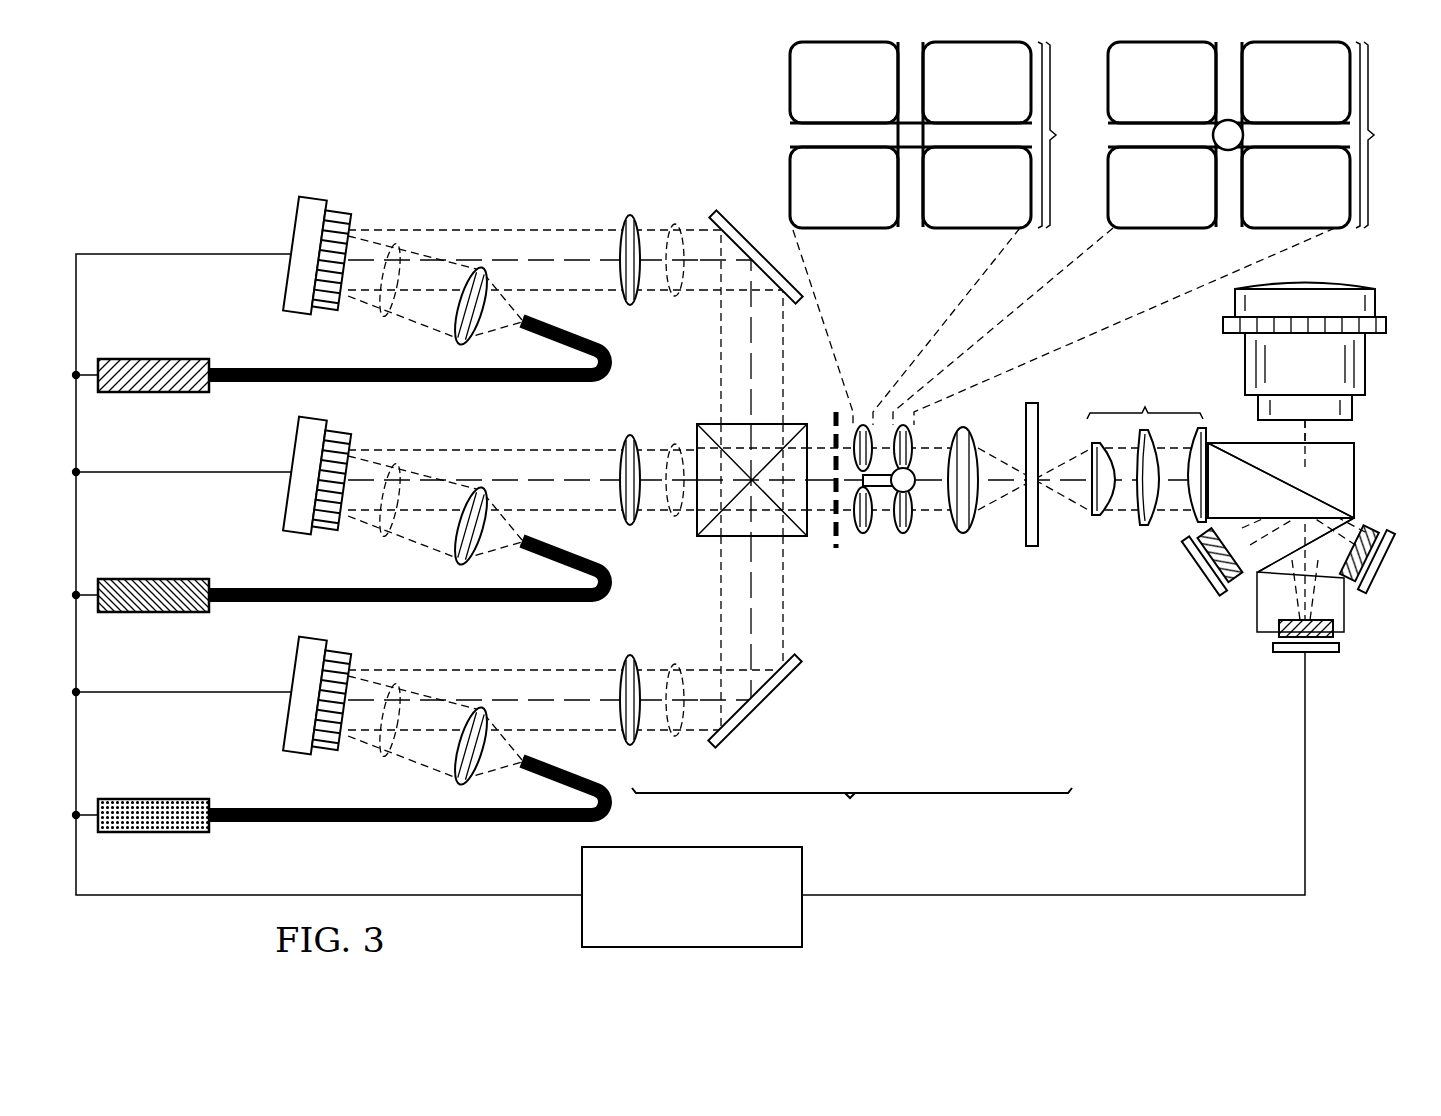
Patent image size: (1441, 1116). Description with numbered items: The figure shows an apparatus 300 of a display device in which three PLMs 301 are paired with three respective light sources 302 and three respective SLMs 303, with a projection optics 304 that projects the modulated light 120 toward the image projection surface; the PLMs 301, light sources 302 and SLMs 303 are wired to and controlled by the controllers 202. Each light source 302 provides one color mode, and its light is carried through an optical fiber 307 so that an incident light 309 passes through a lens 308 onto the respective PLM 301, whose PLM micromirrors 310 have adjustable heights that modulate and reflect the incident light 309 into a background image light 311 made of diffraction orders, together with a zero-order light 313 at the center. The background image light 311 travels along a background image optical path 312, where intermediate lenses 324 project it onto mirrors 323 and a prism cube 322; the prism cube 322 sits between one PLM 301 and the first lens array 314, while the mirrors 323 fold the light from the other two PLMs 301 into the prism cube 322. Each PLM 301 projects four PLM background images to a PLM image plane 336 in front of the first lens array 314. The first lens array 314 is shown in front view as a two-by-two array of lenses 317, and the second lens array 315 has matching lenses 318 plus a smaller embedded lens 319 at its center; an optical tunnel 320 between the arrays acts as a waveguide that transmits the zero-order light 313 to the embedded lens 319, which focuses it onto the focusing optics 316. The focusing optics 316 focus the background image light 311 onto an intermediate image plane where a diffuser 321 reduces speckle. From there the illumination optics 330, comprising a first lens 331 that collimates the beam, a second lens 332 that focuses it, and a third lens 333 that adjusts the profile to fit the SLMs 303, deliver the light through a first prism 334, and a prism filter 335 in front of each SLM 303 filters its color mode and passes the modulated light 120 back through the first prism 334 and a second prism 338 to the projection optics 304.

The modulated light 120 is at (1312, 452).
The controllers 202 is at (712, 927).
The apparatus 300 is at (440, 140).
The PLM 301 is at (293, 222).
The light source 302 is at (148, 359).
The SLM 303 is at (1203, 582).
The projection optics 304 is at (1348, 284).
The optical fiber 307 is at (272, 367).
The lens 308 is at (460, 330).
The incident light 309 is at (383, 317).
The PLM micromirrors 310 is at (352, 222).
The background image light 311 is at (675, 223).
The background image optical path 312 is at (852, 812).
The zero-order light 313 is at (672, 294).
The first lens array 314 is at (866, 410).
The second lens array 315 is at (897, 548).
The focusing optics 316 is at (966, 534).
The lenses 317 is at (864, 95).
The lenses 318 is at (1182, 95).
The embedded lens 319 is at (912, 492).
The optical tunnel 320 is at (880, 505).
The diffuser 321 is at (1032, 548).
The prism cube 322 is at (712, 540).
The mirror 323 is at (743, 232).
The intermediate lens 324 is at (630, 214).
The illumination optics 330 is at (1145, 396).
The first lens 331 is at (1100, 517).
The second lens 332 is at (1148, 527).
The third lens 333 is at (1196, 523).
The first prism 334 is at (1222, 443).
The prism filter 335 is at (1358, 517).
The PLM image plane 336 is at (833, 440).
The second prism 338 is at (1356, 470).